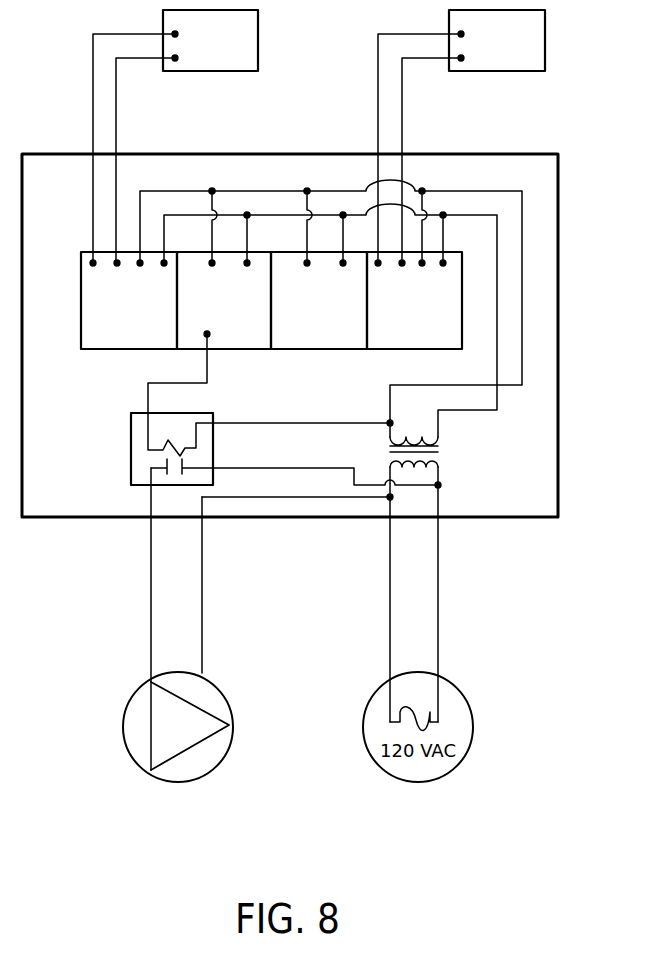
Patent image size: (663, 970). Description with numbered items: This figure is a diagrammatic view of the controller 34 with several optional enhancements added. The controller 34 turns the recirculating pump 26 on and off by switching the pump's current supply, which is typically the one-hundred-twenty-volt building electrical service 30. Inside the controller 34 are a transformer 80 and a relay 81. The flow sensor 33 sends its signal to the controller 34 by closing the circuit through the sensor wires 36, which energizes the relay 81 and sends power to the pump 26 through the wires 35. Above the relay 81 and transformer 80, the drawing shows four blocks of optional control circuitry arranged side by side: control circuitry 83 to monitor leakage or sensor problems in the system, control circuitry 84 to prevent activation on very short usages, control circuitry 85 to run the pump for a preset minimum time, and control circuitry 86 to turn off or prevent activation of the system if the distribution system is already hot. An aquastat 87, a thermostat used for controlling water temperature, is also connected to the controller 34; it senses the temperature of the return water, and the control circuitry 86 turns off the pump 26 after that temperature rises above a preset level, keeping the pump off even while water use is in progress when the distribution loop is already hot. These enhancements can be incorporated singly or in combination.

The recirculating pump 26 is at (168, 736).
The building electrical service 30 is at (386, 599).
The flow sensor 33 is at (186, 53).
The controller 34 is at (291, 181).
The wires 35 is at (146, 599).
The sensor wires 36 is at (93, 91).
The transformer 80 is at (440, 448).
The relay 81 is at (131, 436).
The control circuitry to monitor leakage or sensor problems 83 is at (118, 308).
The control circuitry to prevent activation on very short usages 84 is at (212, 308).
The control circuitry to run the pump for a preset minimum time 85 is at (308, 308).
The control circuitry to turn off or prevent activation if the distribution system i 86 is at (403, 308).
The aquastat 87 is at (482, 53).